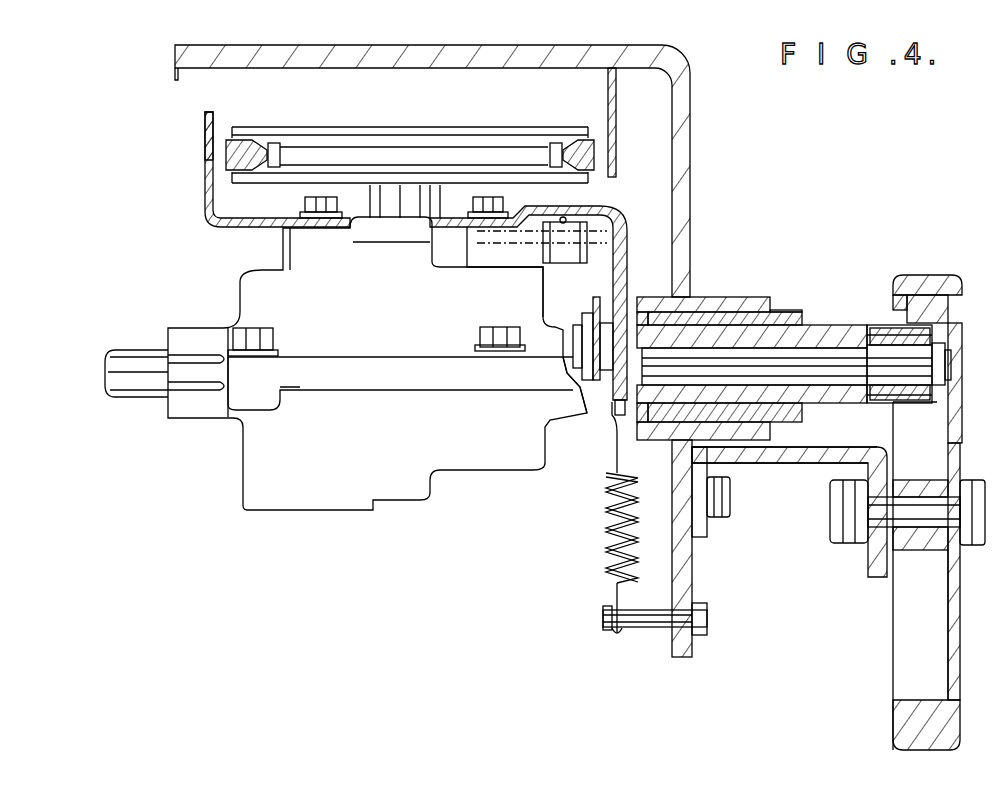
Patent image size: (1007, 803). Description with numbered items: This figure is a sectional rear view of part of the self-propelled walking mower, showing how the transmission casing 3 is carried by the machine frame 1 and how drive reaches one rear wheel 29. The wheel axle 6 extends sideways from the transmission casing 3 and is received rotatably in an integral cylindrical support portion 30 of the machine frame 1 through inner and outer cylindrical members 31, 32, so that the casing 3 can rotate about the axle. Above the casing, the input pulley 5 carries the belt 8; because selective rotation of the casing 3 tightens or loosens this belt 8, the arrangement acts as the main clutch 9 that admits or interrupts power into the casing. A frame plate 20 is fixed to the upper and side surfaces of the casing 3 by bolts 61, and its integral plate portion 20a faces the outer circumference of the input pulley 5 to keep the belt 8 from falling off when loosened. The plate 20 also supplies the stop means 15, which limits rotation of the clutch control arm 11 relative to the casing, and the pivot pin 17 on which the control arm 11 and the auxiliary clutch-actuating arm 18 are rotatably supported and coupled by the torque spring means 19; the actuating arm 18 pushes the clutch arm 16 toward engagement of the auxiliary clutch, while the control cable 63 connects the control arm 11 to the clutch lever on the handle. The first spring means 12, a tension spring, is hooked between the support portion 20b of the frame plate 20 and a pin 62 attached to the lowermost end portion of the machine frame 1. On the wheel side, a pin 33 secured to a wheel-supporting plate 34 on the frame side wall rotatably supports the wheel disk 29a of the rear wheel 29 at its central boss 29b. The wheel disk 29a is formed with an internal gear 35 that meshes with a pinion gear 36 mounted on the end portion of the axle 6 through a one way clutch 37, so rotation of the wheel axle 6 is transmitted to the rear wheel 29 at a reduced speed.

The machine frame 1 is at (690, 145).
The transmission casing 3 is at (468, 437).
The input pulley 5 is at (428, 130).
The wheel axle 6 is at (730, 360).
The belt 8 is at (246, 157).
The main clutch 9 is at (571, 130).
The clutch control arm 11 is at (710, 297).
The first spring means 12 is at (608, 497).
The stop means 15 is at (558, 218).
The clutch arm 16 is at (616, 215).
The pivot pin 17 is at (567, 390).
The auxiliary clutch-actuating arm 18 is at (543, 280).
The torque spring means 19 is at (592, 294).
The frame plate 20 is at (632, 243).
The plate portion 20a is at (205, 124).
The support portion 20b is at (612, 403).
The rear wheel 29 is at (928, 283).
The wheel disk 29a is at (948, 630).
The central boss 29b is at (917, 487).
The cylindrical support portion 30 is at (708, 303).
The inner cylindrical member 31 is at (768, 335).
The outer cylindrical member 32 is at (748, 447).
The pin 33 is at (923, 520).
The wheel-supporting plate 34 is at (813, 463).
The internal gear 35 is at (917, 703).
The pinion gear 36 is at (910, 323).
The one way clutch 37 is at (885, 345).
The bolt 61 is at (304, 207).
The pin 62 is at (645, 618).
The control cable 63 is at (616, 115).